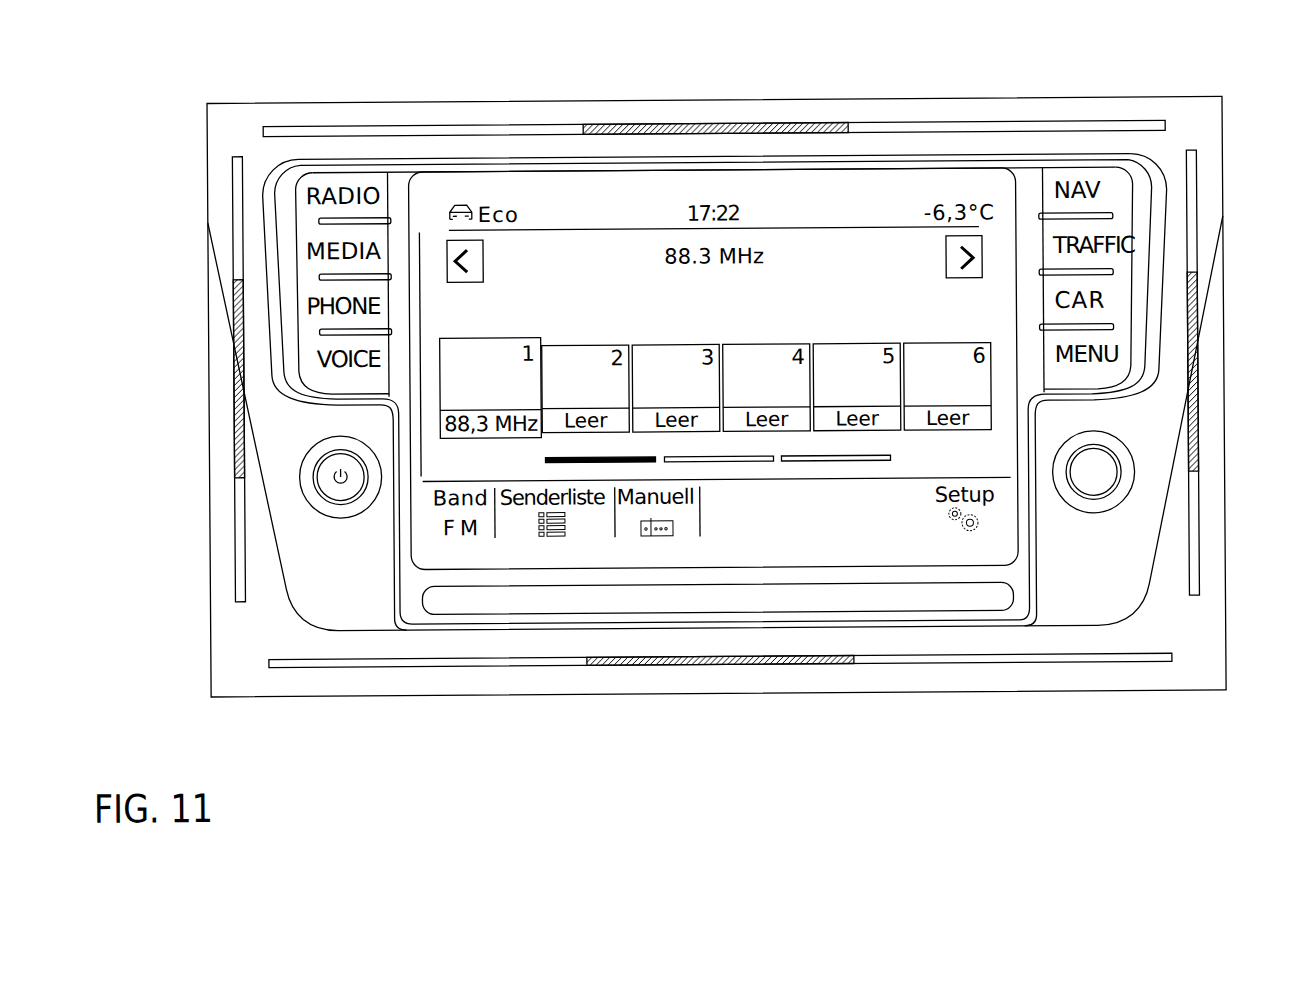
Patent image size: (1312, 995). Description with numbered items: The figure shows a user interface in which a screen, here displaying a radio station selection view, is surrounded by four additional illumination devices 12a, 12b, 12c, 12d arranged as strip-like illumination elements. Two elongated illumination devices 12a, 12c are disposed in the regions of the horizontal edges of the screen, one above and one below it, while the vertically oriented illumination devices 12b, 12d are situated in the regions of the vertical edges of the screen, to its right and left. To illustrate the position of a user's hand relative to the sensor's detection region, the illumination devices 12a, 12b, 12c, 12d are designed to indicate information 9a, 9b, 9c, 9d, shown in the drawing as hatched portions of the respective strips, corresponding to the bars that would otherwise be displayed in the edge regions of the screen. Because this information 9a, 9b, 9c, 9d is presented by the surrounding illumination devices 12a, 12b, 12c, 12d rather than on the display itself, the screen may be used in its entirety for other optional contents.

The illumination device 12a is at (494, 115).
The illumination device 12b is at (1208, 210).
The illumination device 12c is at (499, 682).
The illumination device 12d is at (222, 212).
The information 9a is at (702, 131).
The information 9b is at (1192, 380).
The information 9c is at (711, 665).
The information 9d is at (238, 383).